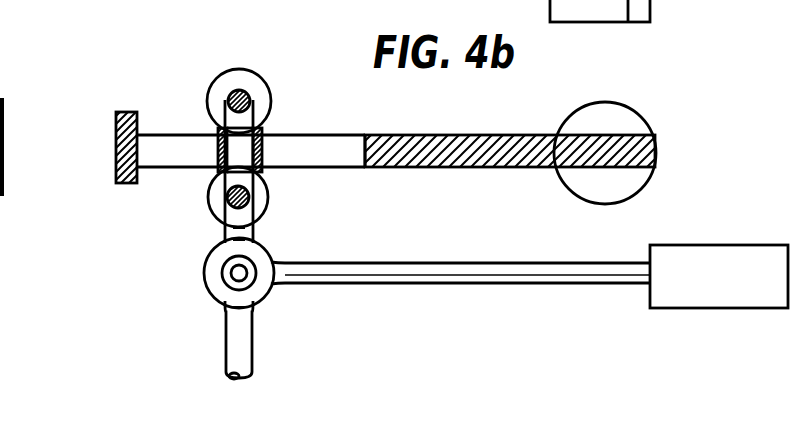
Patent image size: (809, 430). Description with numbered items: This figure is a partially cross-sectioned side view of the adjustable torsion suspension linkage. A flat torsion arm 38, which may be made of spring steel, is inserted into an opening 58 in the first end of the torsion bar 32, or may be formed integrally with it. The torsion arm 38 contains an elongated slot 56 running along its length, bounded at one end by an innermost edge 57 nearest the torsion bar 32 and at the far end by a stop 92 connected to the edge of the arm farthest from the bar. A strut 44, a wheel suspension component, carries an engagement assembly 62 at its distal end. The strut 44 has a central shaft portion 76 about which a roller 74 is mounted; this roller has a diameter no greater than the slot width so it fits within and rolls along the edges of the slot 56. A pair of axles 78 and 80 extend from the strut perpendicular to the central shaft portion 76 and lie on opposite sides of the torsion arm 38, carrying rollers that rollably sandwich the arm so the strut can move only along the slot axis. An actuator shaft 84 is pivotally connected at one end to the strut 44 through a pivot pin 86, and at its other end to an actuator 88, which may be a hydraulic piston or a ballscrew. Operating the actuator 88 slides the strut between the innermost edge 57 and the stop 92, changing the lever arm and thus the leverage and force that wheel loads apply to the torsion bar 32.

The torsion bar 32 is at (640, 117).
The torsion arm 38 is at (479, 135).
The strut 44 is at (253, 343).
The elongated slot 56 is at (357, 142).
The innermost edge of slot 57 is at (365, 167).
The opening 58 is at (627, 22).
The engagement assembly 62 is at (194, 90).
The roller 74 is at (257, 167).
The central shaft portion 76 is at (245, 150).
The axle 78 is at (250, 97).
The axle 80 is at (268, 189).
The actuator shaft 84 is at (507, 263).
The pivot pin 86 is at (231, 273).
The actuator 88 is at (745, 245).
The stop 92 is at (116, 150).